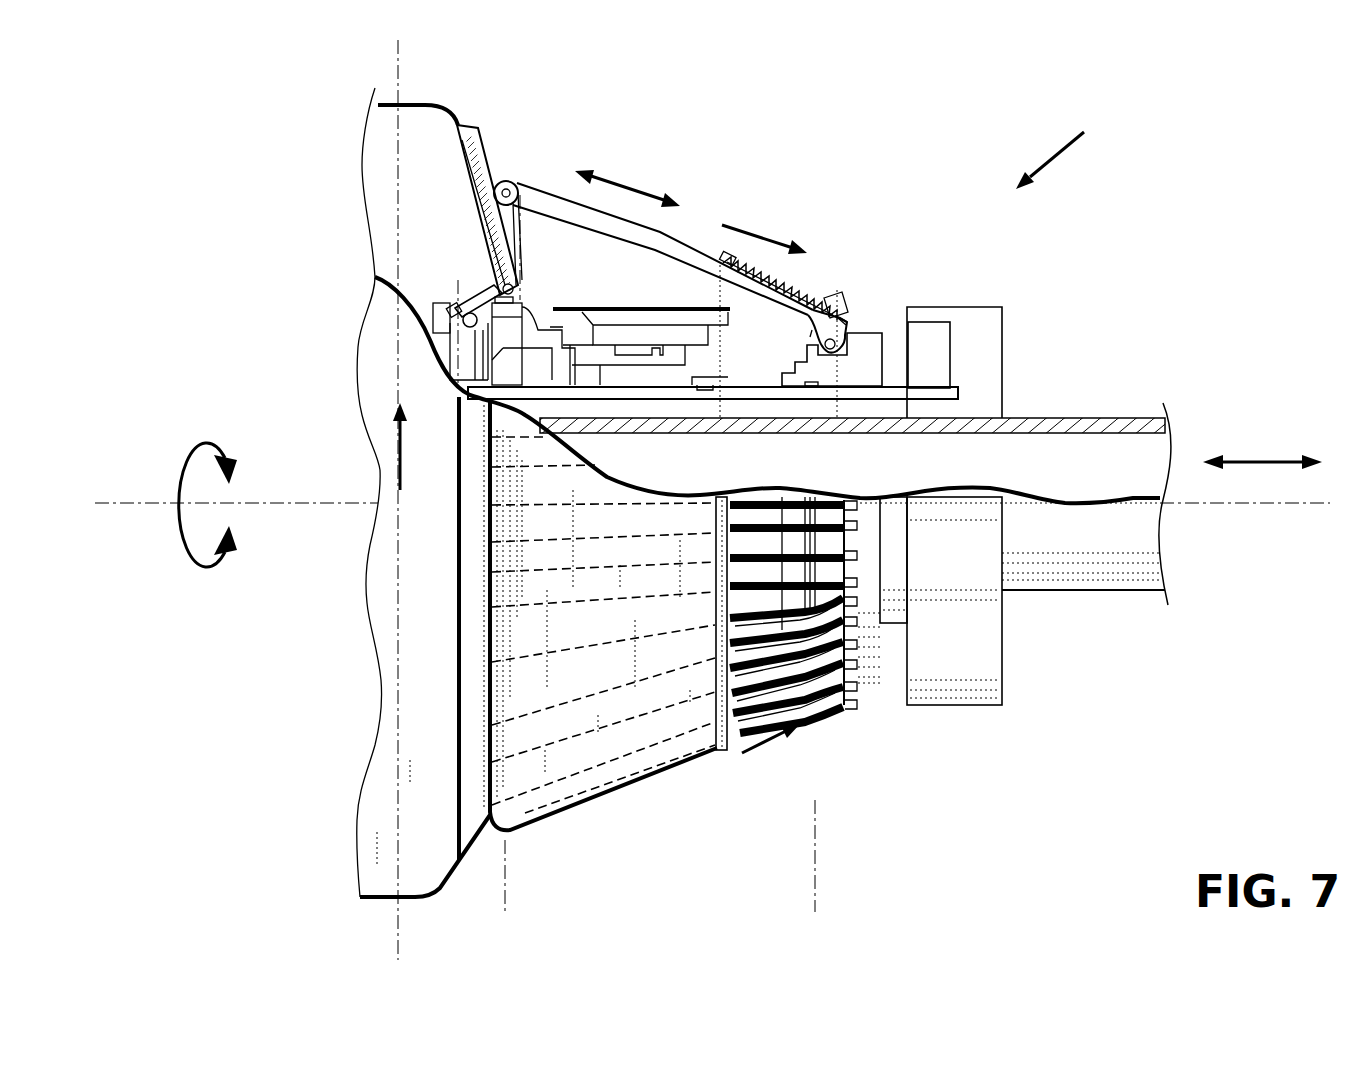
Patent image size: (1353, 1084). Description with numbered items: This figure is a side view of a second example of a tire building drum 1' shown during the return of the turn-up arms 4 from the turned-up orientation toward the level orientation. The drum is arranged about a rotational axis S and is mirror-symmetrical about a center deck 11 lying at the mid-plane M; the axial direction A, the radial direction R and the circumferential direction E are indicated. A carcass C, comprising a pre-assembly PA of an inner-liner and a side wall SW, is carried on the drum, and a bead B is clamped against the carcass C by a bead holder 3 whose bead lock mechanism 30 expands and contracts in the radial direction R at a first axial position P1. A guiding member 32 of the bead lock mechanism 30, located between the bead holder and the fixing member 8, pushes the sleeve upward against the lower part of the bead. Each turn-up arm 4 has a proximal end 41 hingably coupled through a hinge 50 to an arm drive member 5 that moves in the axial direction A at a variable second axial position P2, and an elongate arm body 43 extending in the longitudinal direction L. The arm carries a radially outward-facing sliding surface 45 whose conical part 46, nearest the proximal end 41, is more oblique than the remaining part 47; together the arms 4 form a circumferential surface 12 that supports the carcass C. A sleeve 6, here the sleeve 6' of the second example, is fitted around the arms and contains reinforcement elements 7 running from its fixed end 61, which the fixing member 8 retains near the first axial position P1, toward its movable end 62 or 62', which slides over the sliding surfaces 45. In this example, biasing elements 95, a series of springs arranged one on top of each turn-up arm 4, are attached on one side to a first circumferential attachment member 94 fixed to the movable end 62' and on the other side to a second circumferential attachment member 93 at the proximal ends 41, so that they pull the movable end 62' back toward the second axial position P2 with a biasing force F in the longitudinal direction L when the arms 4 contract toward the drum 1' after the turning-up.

The tire building drum 1' is at (1058, 142).
The bead holder 3 is at (507, 335).
The bead lock mechanism 30 is at (507, 335).
The turn-up arm 4 is at (792, 303).
The arm drive member 5 is at (880, 357).
The sleeve 6 is at (768, 676).
The sleeve 6' is at (525, 205).
The reinforcement elements 7 is at (570, 737).
The fixing member 8 is at (458, 342).
The center deck 11 is at (380, 205).
The circumferential surface 12 is at (525, 737).
The guiding member 32 is at (458, 293).
The proximal end 41 is at (862, 335).
The elongate arm body 43 is at (677, 257).
The sliding surface 45 is at (765, 267).
The conical part 46 is at (805, 287).
The remaining part 47 is at (557, 203).
The hinge 50 is at (868, 355).
The fixed end 61 is at (457, 313).
The movable end 62 is at (736, 205).
The movable end 62' is at (735, 658).
The second circumferential attachment member 93 is at (838, 323).
The first circumferential attachment member 94 is at (737, 260).
The biasing elements 95 is at (835, 318).
The mid-plane M is at (415, 500).
The rotational axis S is at (698, 505).
The pre-assembly PA is at (478, 165).
The side wall SW is at (508, 237).
The bead B is at (513, 265).
The longitudinal direction L is at (627, 174).
The biasing force F is at (766, 493).
The radial direction R is at (408, 446).
The axial direction A is at (1262, 442).
The circumferential direction E is at (215, 508).
The carcass C is at (388, 633).
The first axial position P1 is at (505, 894).
The second axial position P2 is at (821, 874).